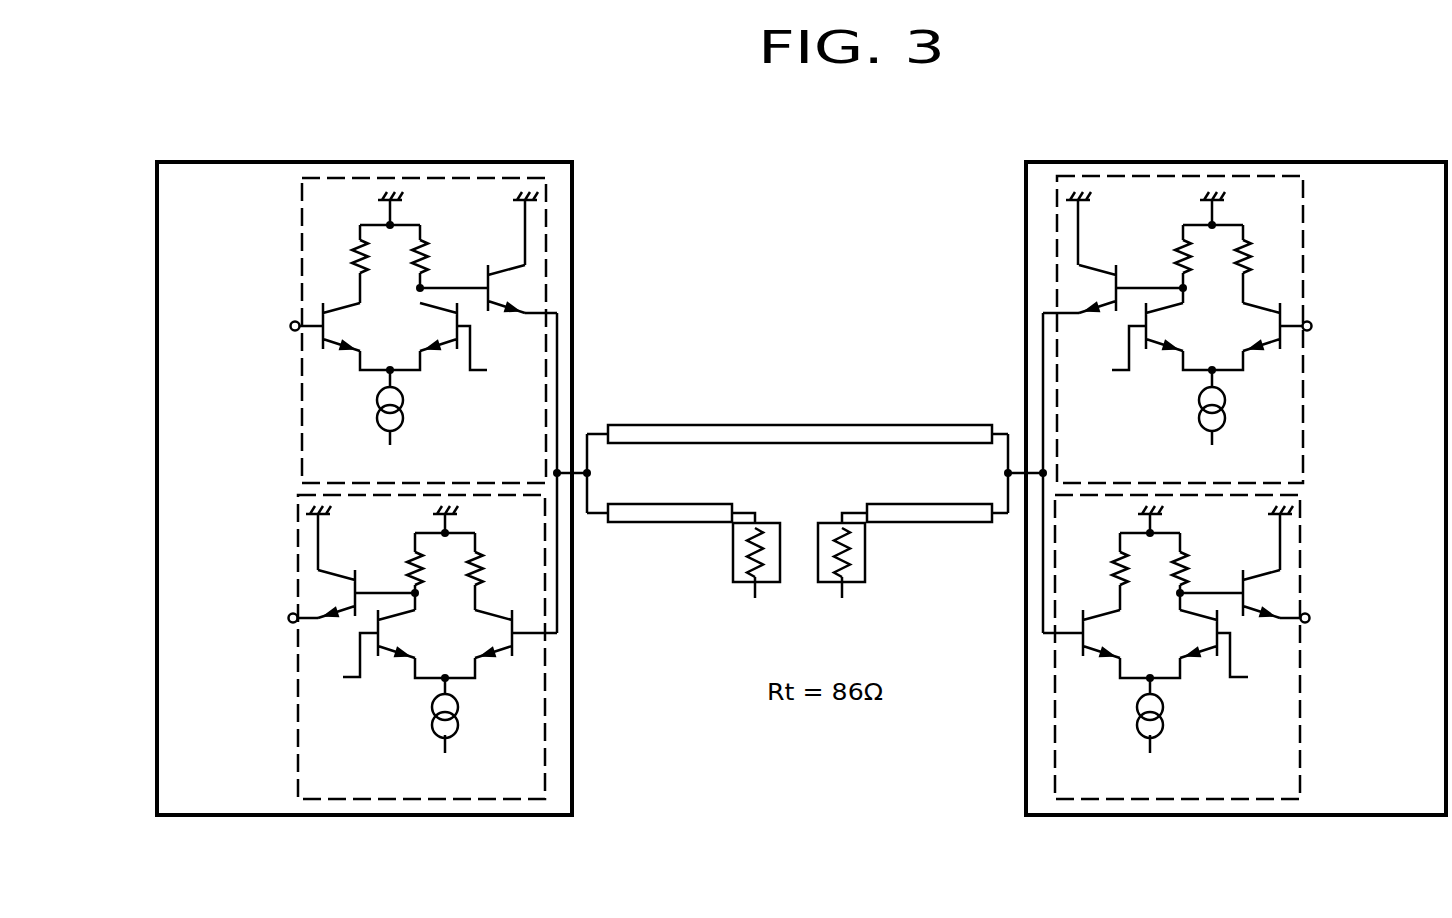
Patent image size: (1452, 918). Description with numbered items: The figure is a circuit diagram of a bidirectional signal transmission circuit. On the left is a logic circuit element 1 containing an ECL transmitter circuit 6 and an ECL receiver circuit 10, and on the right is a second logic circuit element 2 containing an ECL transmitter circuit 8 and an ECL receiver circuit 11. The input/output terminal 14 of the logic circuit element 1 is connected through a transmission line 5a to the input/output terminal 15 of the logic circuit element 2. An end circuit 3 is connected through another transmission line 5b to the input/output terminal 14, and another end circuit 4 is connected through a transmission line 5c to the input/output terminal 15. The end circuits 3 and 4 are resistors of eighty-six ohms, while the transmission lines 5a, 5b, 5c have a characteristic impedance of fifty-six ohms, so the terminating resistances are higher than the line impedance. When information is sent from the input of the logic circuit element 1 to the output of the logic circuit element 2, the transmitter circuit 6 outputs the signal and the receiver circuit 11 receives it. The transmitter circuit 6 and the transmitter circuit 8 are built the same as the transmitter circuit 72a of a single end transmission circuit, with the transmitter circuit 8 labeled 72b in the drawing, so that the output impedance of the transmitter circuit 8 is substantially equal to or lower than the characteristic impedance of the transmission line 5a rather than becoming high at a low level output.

The logic circuit element 1 is at (572, 198).
The logic circuit element 2 is at (1026, 198).
The end circuit 3 is at (733, 568).
The end circuit 4 is at (865, 568).
The transmission line 5a is at (672, 425).
The transmission line 5b is at (673, 523).
The transmission line 5c is at (928, 523).
The transmitter circuit 6 is at (359, 323).
The transmitter circuit 72a is at (302, 208).
The transmitter circuit 8 is at (1231, 324).
The ECL transmitter 72b is at (1303, 250).
The receiver circuit 10 is at (298, 533).
The receiver circuit 11 is at (1300, 543).
The input/output terminal 14 is at (586, 478).
The input/output terminal 15 is at (1010, 478).